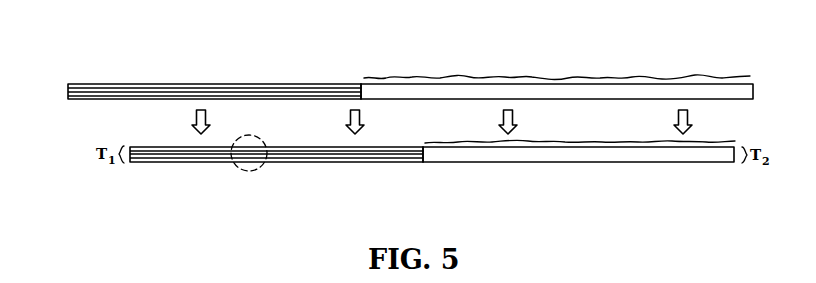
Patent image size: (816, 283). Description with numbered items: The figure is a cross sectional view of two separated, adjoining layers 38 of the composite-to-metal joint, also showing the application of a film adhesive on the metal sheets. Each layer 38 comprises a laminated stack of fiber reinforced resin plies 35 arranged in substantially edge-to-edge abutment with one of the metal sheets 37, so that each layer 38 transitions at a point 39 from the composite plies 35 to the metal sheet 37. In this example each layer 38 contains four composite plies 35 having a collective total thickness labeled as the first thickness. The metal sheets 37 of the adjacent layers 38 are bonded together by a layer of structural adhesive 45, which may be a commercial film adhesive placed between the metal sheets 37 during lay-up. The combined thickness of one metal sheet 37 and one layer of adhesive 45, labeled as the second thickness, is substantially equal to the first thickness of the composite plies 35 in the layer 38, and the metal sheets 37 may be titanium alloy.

The fiber reinforced resin plies 35 is at (191, 91).
The metal sheets 37 is at (676, 92).
The layers 38 is at (94, 110).
The point 39 is at (356, 78).
The structural adhesive 45 is at (455, 76).